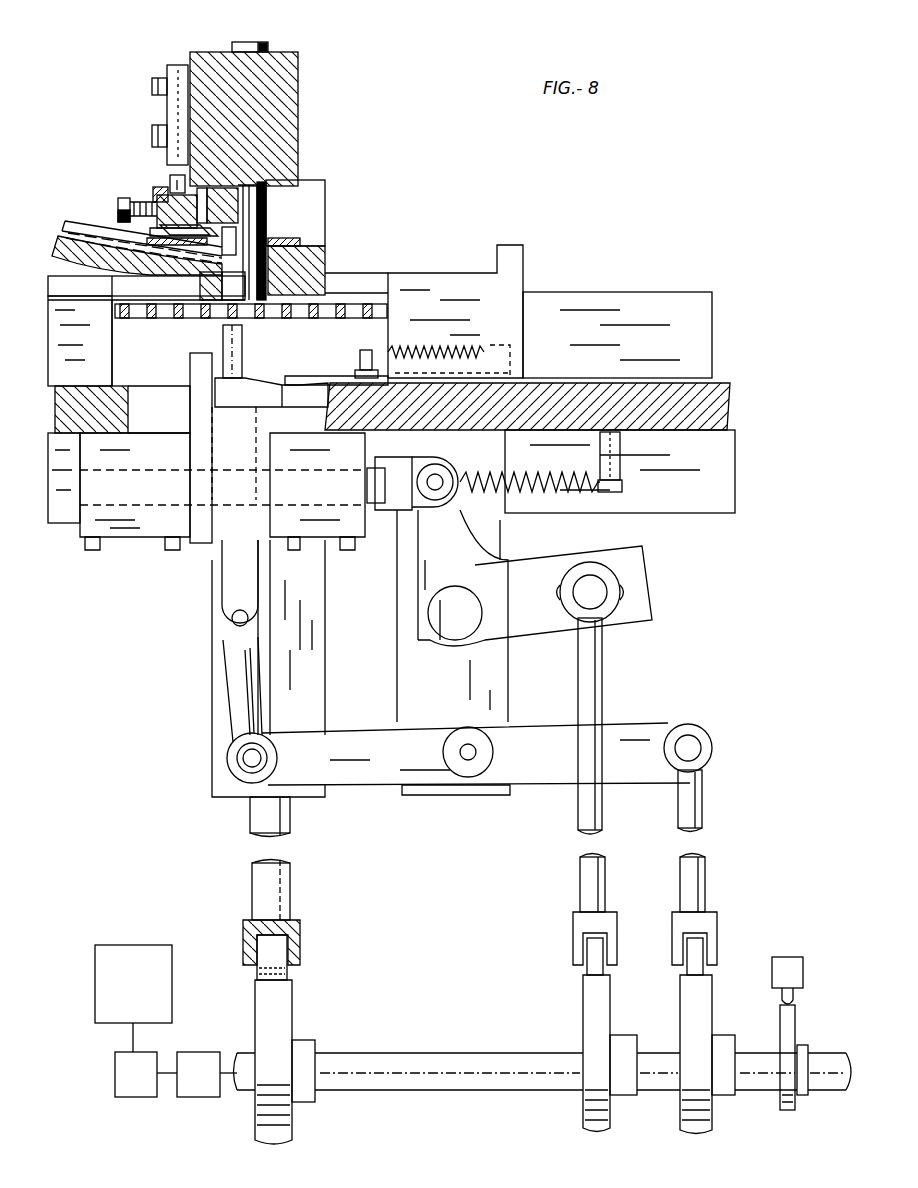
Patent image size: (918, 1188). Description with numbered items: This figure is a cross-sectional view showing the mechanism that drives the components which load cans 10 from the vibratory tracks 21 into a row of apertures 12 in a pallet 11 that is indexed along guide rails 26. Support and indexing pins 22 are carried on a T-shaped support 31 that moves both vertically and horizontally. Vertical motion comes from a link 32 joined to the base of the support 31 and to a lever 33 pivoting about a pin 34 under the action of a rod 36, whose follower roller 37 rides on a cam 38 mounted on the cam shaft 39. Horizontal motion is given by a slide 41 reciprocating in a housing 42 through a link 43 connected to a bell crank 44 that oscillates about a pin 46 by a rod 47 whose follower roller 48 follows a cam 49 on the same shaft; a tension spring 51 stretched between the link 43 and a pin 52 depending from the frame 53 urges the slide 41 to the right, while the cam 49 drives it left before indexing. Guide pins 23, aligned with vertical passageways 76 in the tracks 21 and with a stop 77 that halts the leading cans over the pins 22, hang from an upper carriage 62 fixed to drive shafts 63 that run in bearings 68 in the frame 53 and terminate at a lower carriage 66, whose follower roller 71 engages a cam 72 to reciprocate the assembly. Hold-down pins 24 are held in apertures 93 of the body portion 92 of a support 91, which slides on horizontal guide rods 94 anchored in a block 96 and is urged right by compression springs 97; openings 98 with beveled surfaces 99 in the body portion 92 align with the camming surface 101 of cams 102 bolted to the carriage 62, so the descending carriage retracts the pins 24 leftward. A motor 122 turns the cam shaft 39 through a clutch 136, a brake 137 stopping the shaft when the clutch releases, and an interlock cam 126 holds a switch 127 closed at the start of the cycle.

The can 10 is at (62, 252).
The pallet 11 is at (358, 318).
The aperture 12 is at (216, 318).
The vibratory track 21 is at (64, 233).
The support and indexing pin 22 is at (242, 333).
The guide pin 23 is at (268, 237).
The hold-down pin 24 is at (234, 263).
The guide rail 26 is at (318, 312).
The T-shaped support 31 is at (245, 403).
The link 32 is at (235, 682).
The lever 33 is at (390, 777).
The pin 34 is at (468, 760).
The rod 36 is at (702, 809).
The follower roller 37 is at (690, 955).
The cam 38 is at (692, 1098).
The cam shaft 39 is at (445, 1085).
The slide 41 is at (372, 512).
The housing 42 is at (310, 537).
The link 43 is at (405, 470).
The bell crank 44 is at (557, 632).
The pin 46 is at (445, 615).
The rod 47 is at (585, 802).
The follower roller 48 is at (592, 955).
The cam 49 is at (590, 1098).
The tension spring 51 is at (470, 472).
The pin 52 is at (620, 456).
The frame 53 is at (727, 407).
The upper carriage 62 is at (293, 121).
The drive shaft 63 is at (268, 44).
The lower carriage 66 is at (300, 945).
The bearing 68 is at (215, 745).
The follower roller 71 is at (283, 968).
The cam 72 is at (286, 1115).
The vertical passageway 76 is at (268, 217).
The stop 77 is at (316, 258).
The support 91 is at (206, 190).
The body portion 92 is at (170, 236).
The aperture 93 is at (197, 286).
The horizontal guide rod 94 is at (152, 202).
The block 96 is at (232, 198).
The compression spring 97 is at (128, 199).
The opening 98 is at (150, 230).
The beveled surface 99 is at (170, 188).
The camming surface 101 is at (146, 288).
The cam 102 is at (168, 108).
The motor 122 is at (172, 975).
The interlock cam 126 is at (790, 1084).
The switch 127 is at (796, 971).
The clutch 136 is at (122, 1090).
The brake 137 is at (200, 1088).